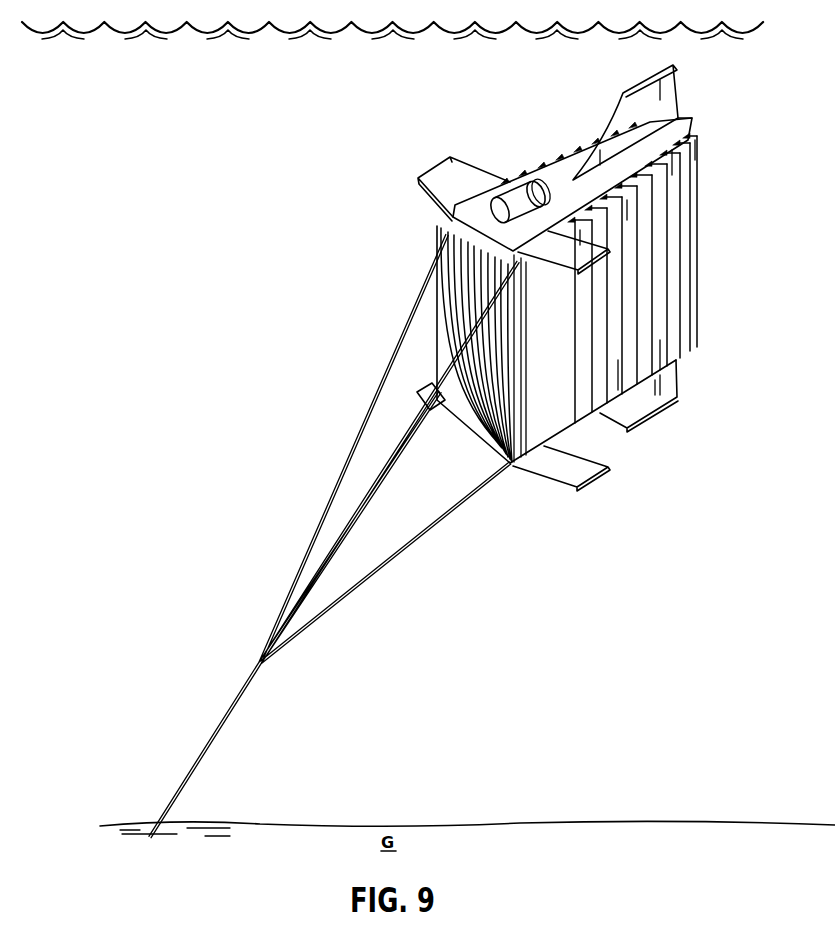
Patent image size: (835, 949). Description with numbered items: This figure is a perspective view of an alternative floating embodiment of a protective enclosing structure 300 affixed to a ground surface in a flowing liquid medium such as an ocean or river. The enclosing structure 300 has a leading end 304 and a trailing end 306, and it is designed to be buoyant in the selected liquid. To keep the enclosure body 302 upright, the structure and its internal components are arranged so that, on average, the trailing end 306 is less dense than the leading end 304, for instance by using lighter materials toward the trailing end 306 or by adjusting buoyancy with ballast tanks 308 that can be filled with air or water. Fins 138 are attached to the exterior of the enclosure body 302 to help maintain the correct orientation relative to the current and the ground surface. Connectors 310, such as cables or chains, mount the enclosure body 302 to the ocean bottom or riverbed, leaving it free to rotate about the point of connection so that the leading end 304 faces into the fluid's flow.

The protective enclosing structure 300 is at (422, 108).
The enclosure body 302 is at (440, 215).
The leading end 304 is at (448, 315).
The trailing end 306 is at (680, 143).
The ballast tanks 308 is at (493, 212).
The fins 138 is at (425, 175).
The connectors 310 is at (203, 744).